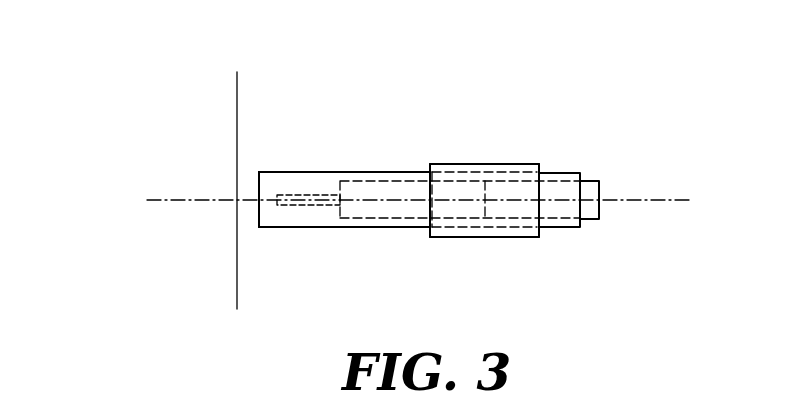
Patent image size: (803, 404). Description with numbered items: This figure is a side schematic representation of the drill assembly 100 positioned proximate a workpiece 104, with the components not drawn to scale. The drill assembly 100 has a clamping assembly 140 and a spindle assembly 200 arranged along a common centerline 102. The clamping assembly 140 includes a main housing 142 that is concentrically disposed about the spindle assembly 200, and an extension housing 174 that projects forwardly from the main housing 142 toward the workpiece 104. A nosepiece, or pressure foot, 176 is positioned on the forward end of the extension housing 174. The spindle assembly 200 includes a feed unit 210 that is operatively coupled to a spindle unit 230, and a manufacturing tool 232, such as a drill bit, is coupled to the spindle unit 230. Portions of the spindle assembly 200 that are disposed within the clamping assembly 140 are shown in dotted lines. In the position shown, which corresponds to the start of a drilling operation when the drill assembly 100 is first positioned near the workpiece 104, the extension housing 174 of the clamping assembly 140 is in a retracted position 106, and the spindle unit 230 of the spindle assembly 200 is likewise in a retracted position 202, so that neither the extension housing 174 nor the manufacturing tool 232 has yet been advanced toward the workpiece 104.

The drill assembly 100 is at (657, 48).
The longitudinal axis 102 is at (165, 201).
The workpiece 104 is at (237, 110).
The retracted position 106 is at (386, 136).
The clamping assembly 140 is at (357, 60).
The main housing 142 is at (490, 164).
The extension housing 174 is at (398, 172).
The nosepiece 176 is at (263, 172).
The spindle assembly 200 is at (612, 151).
The retracted position 202 is at (489, 252).
The feed unit 210 is at (592, 219).
The spindle unit 230 is at (380, 220).
The manufacturing tool 232 is at (292, 205).